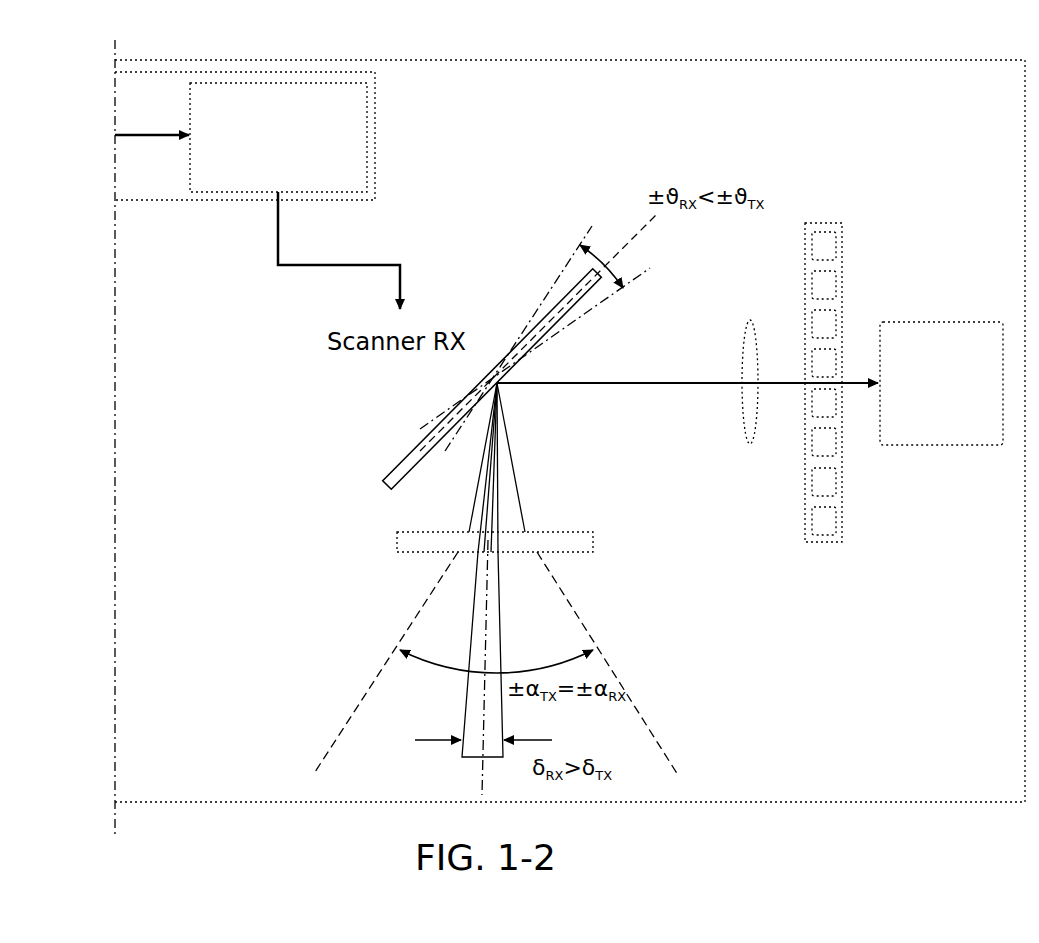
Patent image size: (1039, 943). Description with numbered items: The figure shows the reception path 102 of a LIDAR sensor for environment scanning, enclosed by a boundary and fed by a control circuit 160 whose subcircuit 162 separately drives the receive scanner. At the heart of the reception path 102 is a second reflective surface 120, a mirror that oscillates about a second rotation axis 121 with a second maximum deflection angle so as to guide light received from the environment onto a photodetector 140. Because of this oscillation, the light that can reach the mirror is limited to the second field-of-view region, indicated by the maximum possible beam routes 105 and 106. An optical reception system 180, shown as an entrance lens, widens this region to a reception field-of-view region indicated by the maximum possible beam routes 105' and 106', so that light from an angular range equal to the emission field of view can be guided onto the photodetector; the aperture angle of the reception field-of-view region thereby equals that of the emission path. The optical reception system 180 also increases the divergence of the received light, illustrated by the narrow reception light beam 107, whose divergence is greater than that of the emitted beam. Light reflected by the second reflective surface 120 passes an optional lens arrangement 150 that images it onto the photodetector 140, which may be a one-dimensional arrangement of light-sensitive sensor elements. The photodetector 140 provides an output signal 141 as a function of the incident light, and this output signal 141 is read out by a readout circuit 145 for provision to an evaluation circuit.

The reception path 102 is at (600, 43).
The control circuit 160 is at (376, 127).
The subcircuit 162 is at (310, 192).
The second reflective surface 120 is at (393, 470).
The second rotation axis 121 is at (490, 368).
The beam route 105 is at (457, 457).
The beam route 106 is at (537, 457).
The beam route 105' is at (385, 663).
The beam route 106' is at (607, 663).
The reception light beam 107 is at (480, 779).
The optical reception system 180 is at (733, 583).
The lens arrangement 150 is at (752, 325).
The photodetector 140 is at (833, 222).
The output signal 141 is at (850, 387).
The readout circuit 145 is at (937, 320).